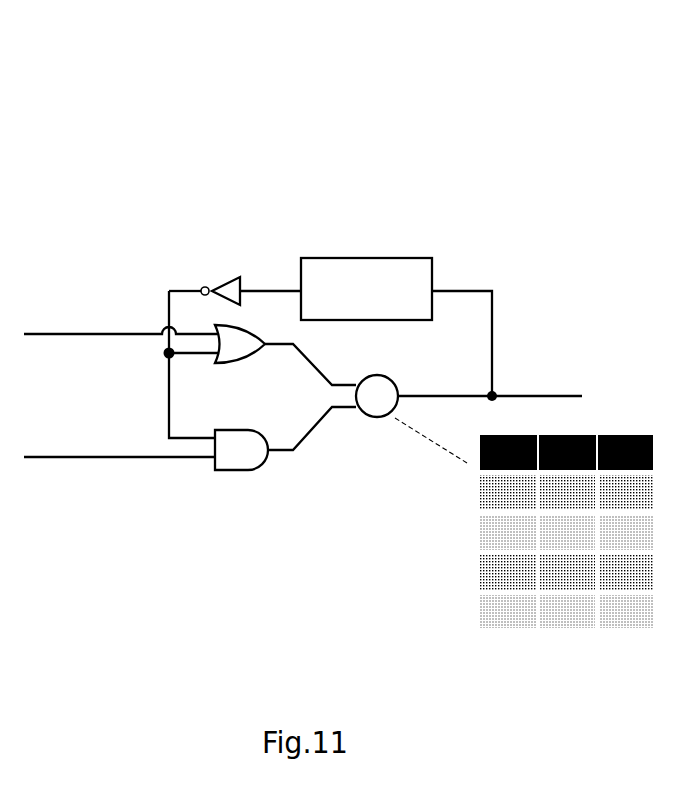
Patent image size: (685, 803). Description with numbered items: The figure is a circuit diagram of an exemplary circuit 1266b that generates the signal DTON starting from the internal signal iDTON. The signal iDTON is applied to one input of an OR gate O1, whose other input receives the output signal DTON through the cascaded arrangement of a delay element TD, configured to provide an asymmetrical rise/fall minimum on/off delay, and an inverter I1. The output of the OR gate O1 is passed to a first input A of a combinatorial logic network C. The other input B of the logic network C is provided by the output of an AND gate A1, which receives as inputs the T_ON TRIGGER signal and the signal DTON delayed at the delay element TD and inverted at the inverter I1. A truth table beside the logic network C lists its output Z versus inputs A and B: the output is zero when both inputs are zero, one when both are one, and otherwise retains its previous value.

The circuit 1266b is at (324, 178).
The delay element TD is at (398, 258).
The inverter I1 is at (235, 283).
The OR gate O1 is at (237, 355).
The AND gate A1 is at (240, 462).
The logic network C is at (378, 410).